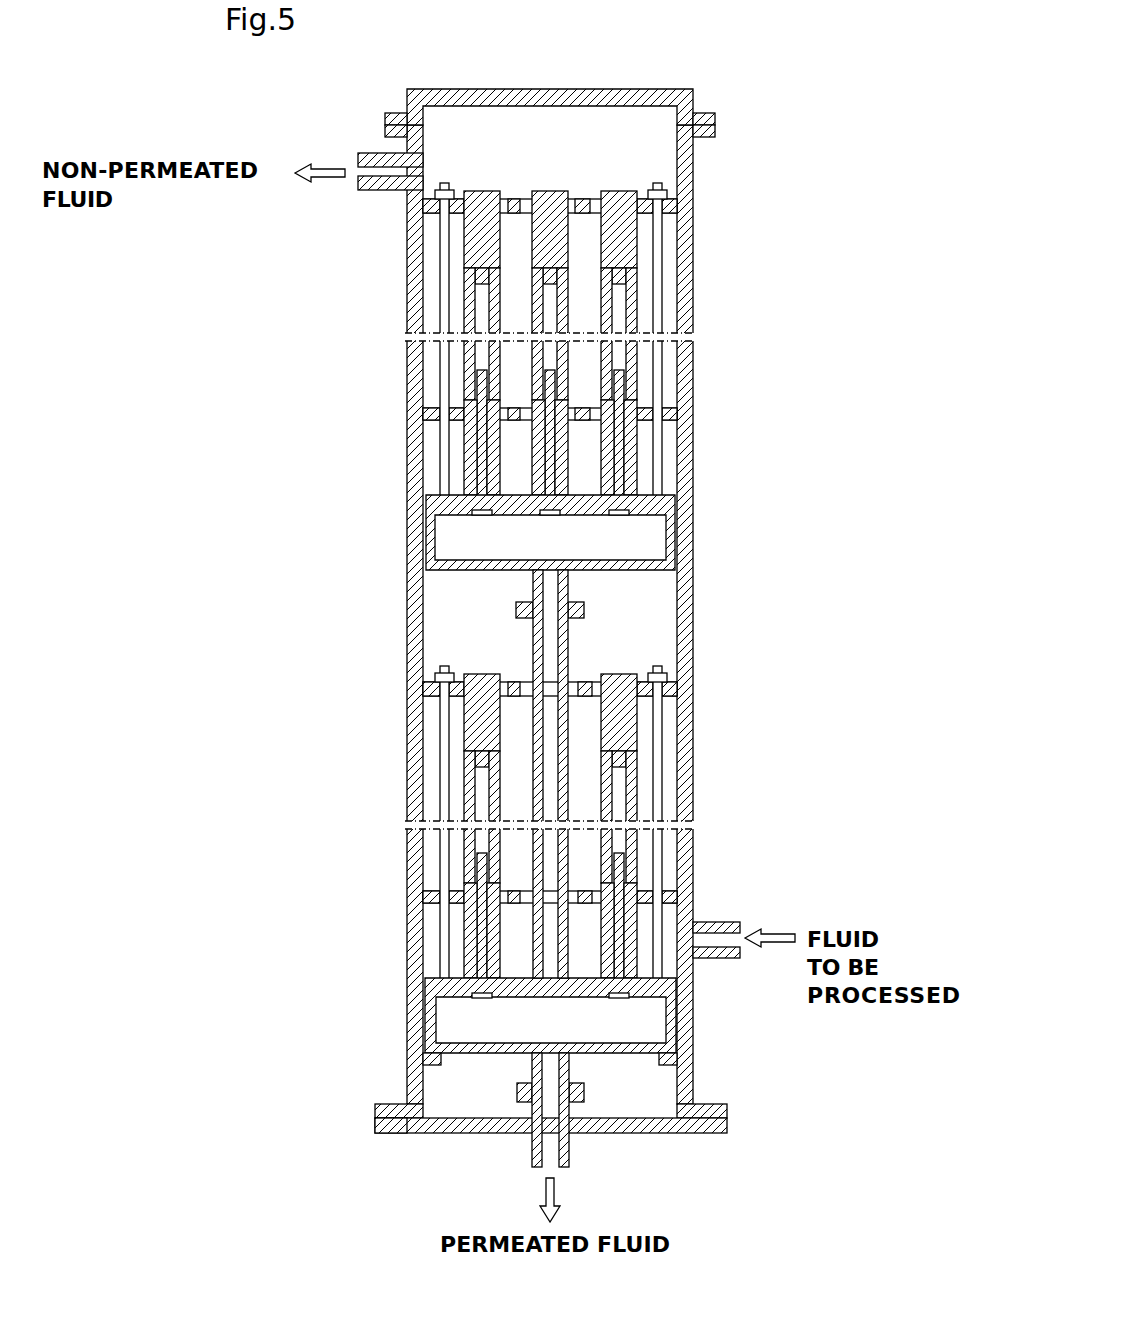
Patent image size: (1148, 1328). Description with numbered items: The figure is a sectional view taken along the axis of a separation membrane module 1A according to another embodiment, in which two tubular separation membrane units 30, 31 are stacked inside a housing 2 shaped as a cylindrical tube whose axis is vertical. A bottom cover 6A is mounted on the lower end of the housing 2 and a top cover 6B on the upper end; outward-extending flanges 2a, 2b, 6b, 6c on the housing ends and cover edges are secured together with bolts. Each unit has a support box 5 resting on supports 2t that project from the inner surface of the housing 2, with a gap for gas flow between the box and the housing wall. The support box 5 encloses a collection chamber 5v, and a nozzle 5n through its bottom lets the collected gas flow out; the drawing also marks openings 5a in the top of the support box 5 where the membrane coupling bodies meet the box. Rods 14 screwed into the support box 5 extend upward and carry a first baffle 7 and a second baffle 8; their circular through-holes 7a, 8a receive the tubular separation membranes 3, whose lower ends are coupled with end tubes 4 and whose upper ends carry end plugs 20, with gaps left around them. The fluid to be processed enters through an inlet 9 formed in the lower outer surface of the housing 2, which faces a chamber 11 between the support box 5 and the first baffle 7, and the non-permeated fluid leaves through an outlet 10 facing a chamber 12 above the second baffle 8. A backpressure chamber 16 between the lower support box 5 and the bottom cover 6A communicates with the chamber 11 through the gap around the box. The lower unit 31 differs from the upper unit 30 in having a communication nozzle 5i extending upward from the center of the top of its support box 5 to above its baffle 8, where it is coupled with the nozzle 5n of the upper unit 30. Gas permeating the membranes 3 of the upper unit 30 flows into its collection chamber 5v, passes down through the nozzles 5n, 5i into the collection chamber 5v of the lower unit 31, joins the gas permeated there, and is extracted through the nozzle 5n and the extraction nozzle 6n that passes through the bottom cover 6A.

The separation membrane module 1A is at (768, 380).
The housing 2 is at (407, 625).
The flange 2a is at (375, 1108).
The flange 2b is at (385, 130).
The support 2t is at (432, 1068).
The tubular separation membrane 3 is at (500, 300).
The end tube 4 is at (500, 460).
The support box 5 is at (640, 510).
The header opening 5a is at (525, 506).
The collection chamber 5v is at (460, 548).
The nozzle 5n is at (568, 590).
The communication nozzle 5i is at (568, 637).
The bottom cover 6A is at (443, 1133).
The top cover 6B is at (530, 89).
The flange 6b is at (375, 1128).
The flange 6c is at (385, 118).
The extraction nozzle 6n is at (570, 1165).
The first baffle 7 is at (514, 421).
The through-hole 7a is at (488, 408).
The second baffle 8 is at (518, 199).
The through-hole 8a is at (650, 199).
The inlet 9 is at (740, 925).
The outlet 10 is at (383, 190).
The chamber 11 is at (596, 452).
The chamber 12 is at (600, 120).
The rod 14 is at (440, 285).
The backpressure chamber 16 is at (610, 1128).
The end plug 20 is at (483, 191).
The tubular separation membrane unit 30 is at (437, 377).
The tubular separation membrane unit 31 is at (437, 797).